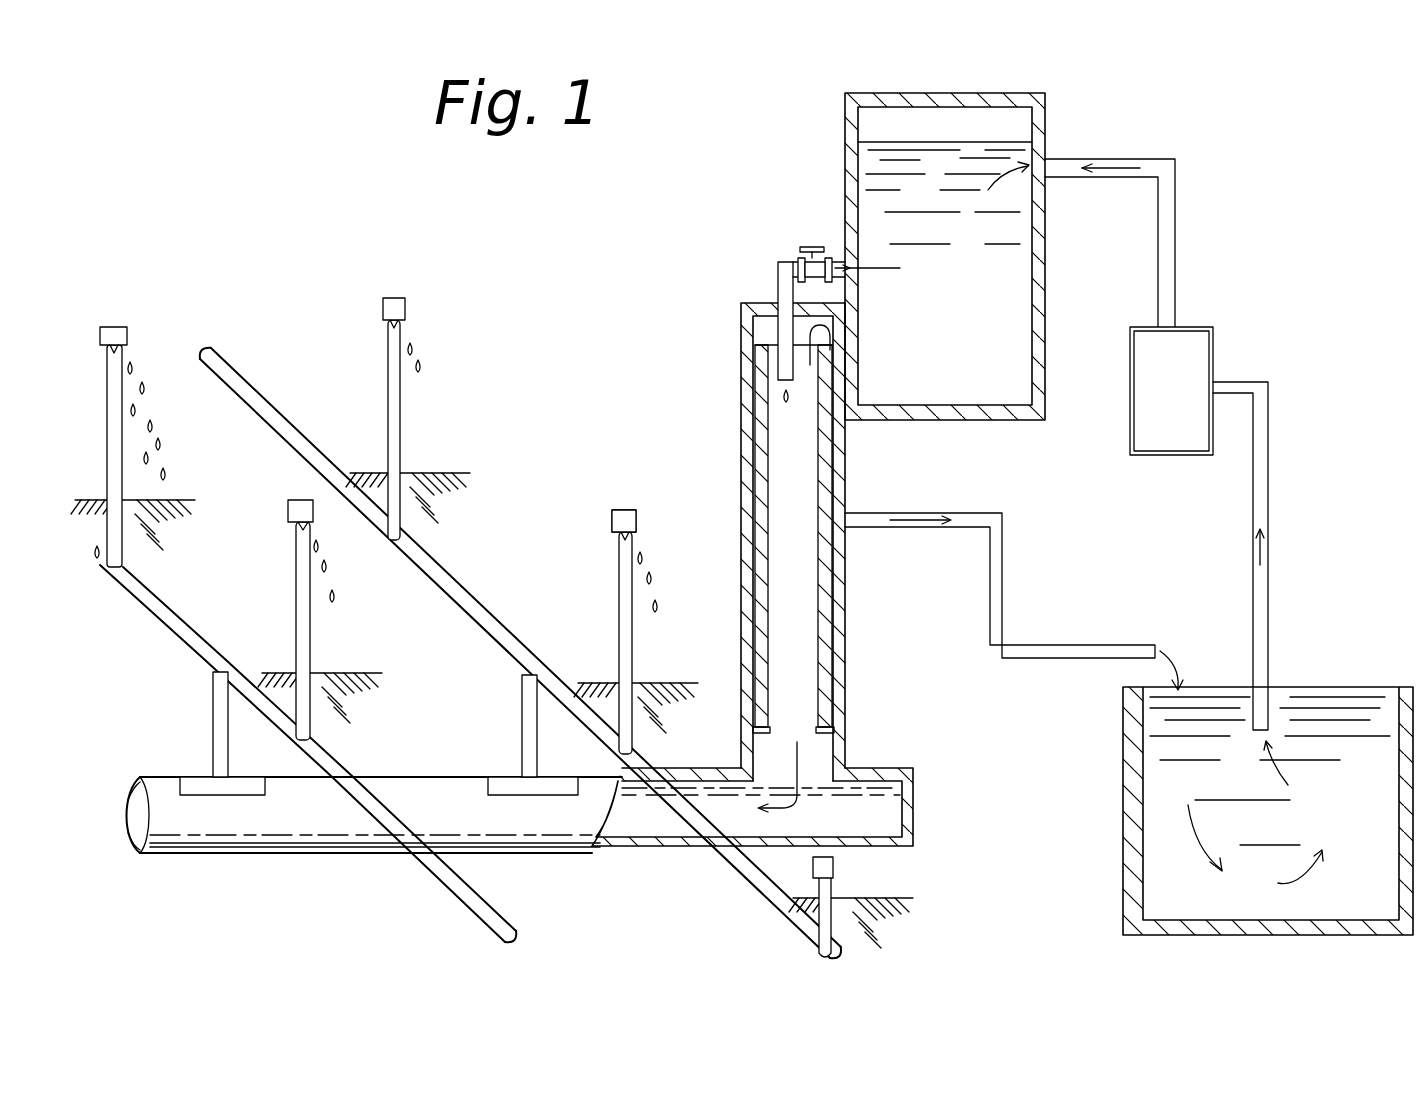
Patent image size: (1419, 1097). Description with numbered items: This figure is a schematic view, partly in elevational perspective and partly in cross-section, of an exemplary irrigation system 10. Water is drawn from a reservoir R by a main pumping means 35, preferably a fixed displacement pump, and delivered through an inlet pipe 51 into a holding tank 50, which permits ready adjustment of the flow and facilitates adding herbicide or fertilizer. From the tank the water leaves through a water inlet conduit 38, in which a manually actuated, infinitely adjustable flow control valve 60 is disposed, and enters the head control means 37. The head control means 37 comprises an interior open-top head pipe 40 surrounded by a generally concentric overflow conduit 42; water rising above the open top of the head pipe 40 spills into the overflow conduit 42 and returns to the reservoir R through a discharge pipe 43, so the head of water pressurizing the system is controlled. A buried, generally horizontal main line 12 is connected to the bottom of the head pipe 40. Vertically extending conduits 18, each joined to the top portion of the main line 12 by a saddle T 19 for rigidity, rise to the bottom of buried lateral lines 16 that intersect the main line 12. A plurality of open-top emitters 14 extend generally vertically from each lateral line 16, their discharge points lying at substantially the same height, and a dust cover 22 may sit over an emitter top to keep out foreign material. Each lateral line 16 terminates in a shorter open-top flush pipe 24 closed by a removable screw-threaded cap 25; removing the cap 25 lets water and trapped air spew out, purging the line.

The irrigation system 10 is at (580, 290).
The main line 12 is at (506, 848).
The open-top emitters 14 is at (108, 462).
The lateral lines 16 is at (485, 626).
The vertically extending conduit 18 is at (530, 743).
The saddle T 19 is at (505, 787).
The dust cover 22 is at (627, 510).
The open-top flush pipe 24 is at (863, 904).
The cap 25 is at (835, 866).
The main pumping means 35 is at (1222, 321).
The head control means 37 is at (690, 303).
The water inlet conduit 38 is at (777, 288).
The head pipe 40 is at (748, 440).
The overflow conduit 42 is at (846, 455).
The discharge pipe 43 is at (994, 602).
The holding tank 50 is at (1096, 52).
The inlet pipe 51 is at (1106, 140).
The flow control valve 60 is at (830, 258).
The reservoir R is at (1338, 692).